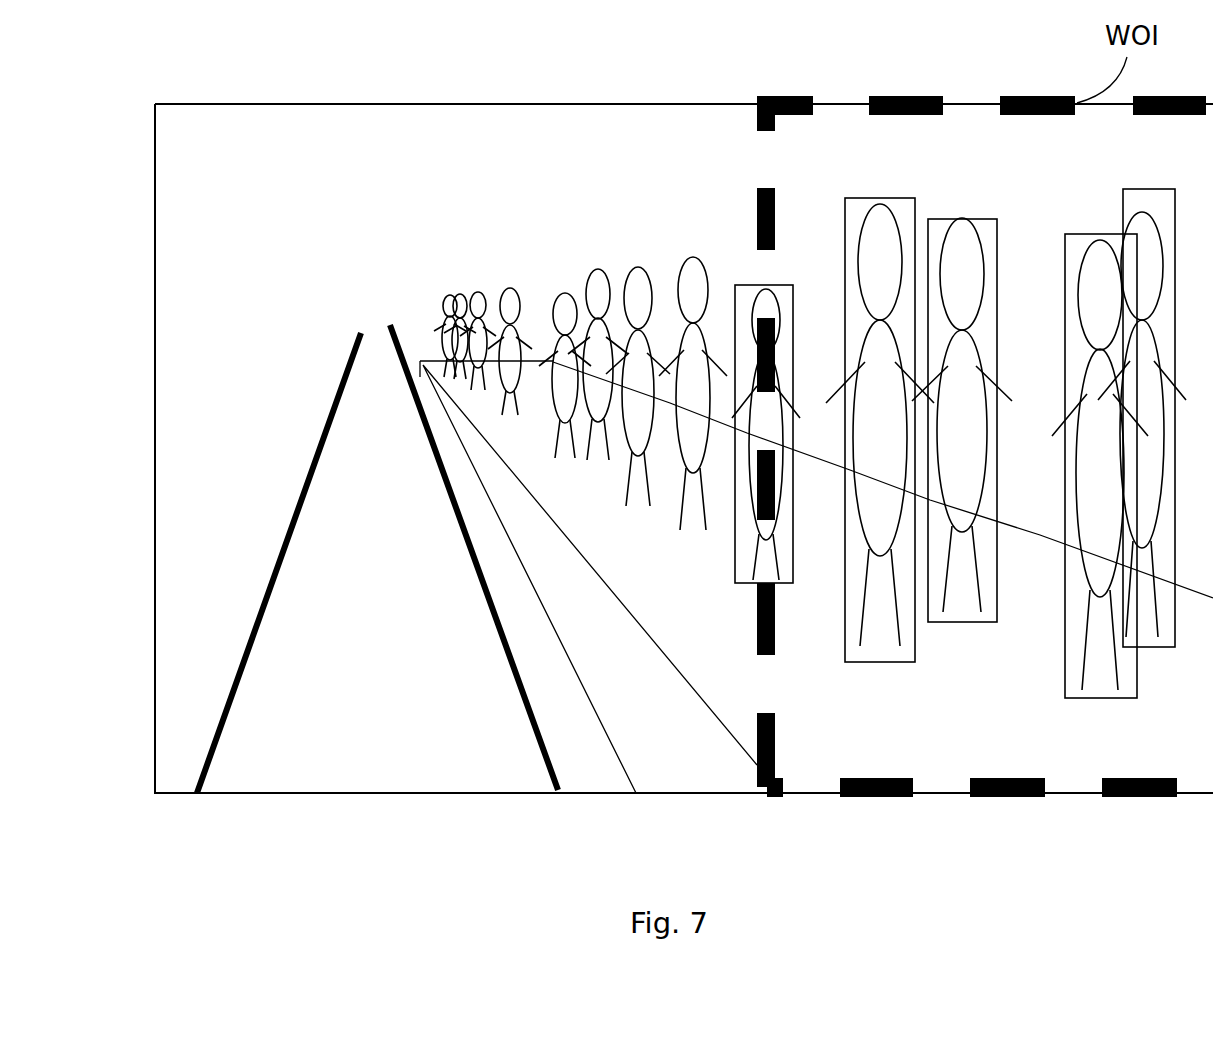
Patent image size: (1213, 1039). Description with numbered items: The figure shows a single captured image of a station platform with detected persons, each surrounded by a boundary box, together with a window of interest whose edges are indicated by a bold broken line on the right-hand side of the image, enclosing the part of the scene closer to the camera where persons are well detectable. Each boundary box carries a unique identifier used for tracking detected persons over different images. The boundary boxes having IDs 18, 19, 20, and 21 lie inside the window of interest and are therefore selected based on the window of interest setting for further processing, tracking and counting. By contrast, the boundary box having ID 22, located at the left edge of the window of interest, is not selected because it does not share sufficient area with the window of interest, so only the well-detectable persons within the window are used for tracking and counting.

The boundary box ID 18 is at (880, 413).
The boundary box ID 19 is at (1149, 401).
The boundary box ID 20 is at (962, 404).
The boundary box ID 21 is at (1094, 449).
The boundary box ID 22 is at (770, 417).